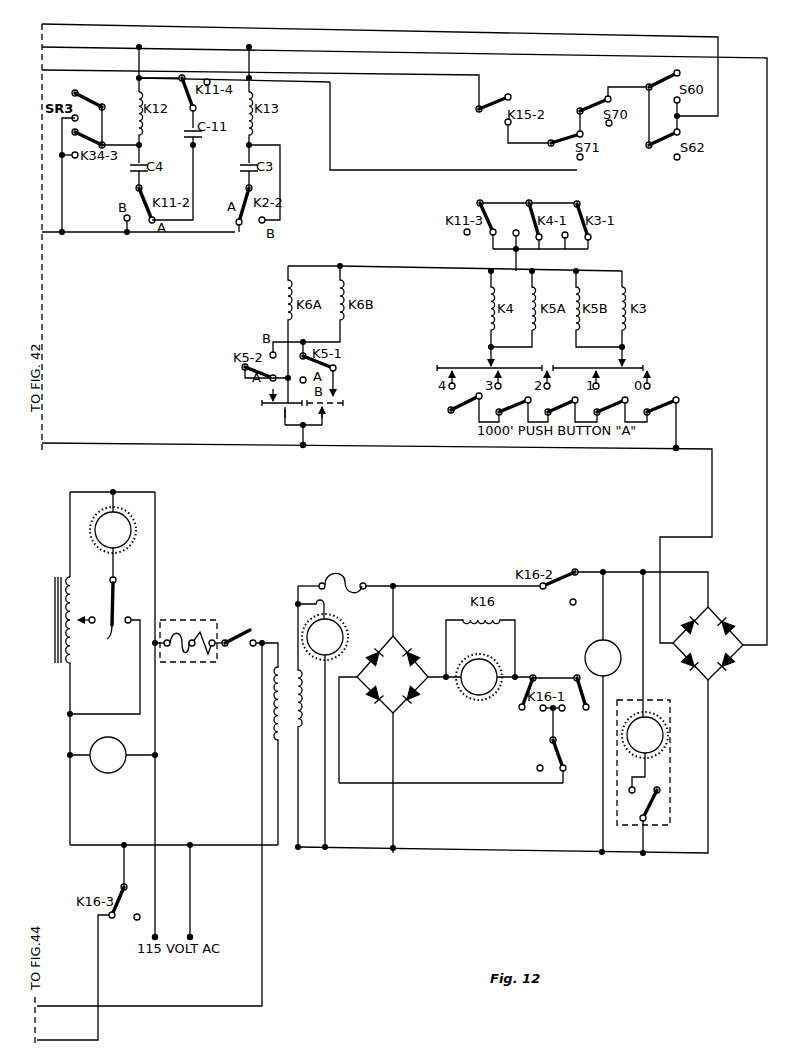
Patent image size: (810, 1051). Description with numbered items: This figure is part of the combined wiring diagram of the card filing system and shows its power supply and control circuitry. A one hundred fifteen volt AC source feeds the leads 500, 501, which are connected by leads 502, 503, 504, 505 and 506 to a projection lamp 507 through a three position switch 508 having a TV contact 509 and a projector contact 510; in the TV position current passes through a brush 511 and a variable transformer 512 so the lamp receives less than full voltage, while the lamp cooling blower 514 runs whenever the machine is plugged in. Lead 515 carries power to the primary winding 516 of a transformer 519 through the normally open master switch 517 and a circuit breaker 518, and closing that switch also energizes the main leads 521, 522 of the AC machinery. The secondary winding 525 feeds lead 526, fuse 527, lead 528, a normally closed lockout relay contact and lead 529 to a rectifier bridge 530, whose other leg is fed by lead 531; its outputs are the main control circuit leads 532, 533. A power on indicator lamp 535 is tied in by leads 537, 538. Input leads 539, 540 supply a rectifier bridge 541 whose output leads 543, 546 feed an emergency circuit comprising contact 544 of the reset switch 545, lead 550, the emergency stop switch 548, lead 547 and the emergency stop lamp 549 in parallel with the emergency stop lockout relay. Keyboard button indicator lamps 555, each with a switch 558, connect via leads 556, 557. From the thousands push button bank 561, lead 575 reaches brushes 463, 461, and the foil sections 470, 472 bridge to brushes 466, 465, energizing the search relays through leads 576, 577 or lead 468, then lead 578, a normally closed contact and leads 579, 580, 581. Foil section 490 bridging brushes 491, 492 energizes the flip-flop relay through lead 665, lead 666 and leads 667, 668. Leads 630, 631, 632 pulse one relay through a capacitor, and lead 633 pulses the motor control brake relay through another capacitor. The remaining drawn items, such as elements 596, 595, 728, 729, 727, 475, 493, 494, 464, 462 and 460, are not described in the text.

The bus line 596 is at (52, 26).
The main control circuit lead 533 is at (52, 50).
The bus line 595 is at (52, 73).
The lead 581 is at (256, 63).
The lead 580 is at (444, 171).
The lead 632 is at (145, 60).
The contact 728 is at (118, 99).
The contact 729 is at (122, 126).
The line 727 is at (62, 191).
The lead 630 is at (50, 240).
The lead 631 is at (115, 240).
The lead 633 is at (210, 240).
The lead 579 is at (515, 190).
The lead 578 is at (522, 260).
The lead 667 is at (320, 263).
The lead 668 is at (413, 268).
The lead 468 is at (610, 277).
The lead 666 is at (284, 335).
The lead 576 is at (506, 338).
The lead 577 is at (535, 347).
The brush 466 is at (495, 362).
The brush 465 is at (626, 360).
The outer foil section 470 is at (460, 367).
The contact bar 475 is at (556, 366).
The foil section 472 is at (640, 368).
The brush 491 is at (335, 386).
The relay contact 493 is at (262, 388).
The foil section 490 is at (266, 406).
The brush 492 is at (325, 428).
The line 494 is at (280, 428).
The lead 665 is at (305, 447).
The push button switch 464 is at (473, 402).
The brush 463 is at (522, 404).
The push button switch 462 is at (571, 404).
The brush 461 is at (620, 404).
The push button switch 460 is at (661, 418).
The thousands push button bank 561 is at (444, 401).
The lead 575 is at (678, 414).
The main control circuit lead 532 is at (42, 440).
The rectifier bridge 530 is at (708, 643).
The lead 529 is at (627, 572).
The lead 528 is at (455, 585).
The lead 526 is at (313, 580).
The fuse 527 is at (342, 575).
The lead 537 is at (327, 608).
The power on indicator lamp 535 is at (325, 637).
The lead 538 is at (326, 806).
The input lead 539 is at (395, 614).
The rectifier bridge 541 is at (392, 674).
The output lead 543 is at (341, 712).
The input lead 540 is at (395, 777).
The output lead 546 is at (440, 680).
The emergency stop lamp 549 is at (479, 677).
The lead 547 is at (508, 690).
The lead 550 is at (551, 712).
The emergency stop switch 548 is at (583, 713).
The contact 544 is at (566, 771).
The reset switch 545 is at (550, 777).
The lead 556 is at (646, 682).
The keyboard button indicator lamp 555 is at (643, 762).
The switch 558 is at (658, 802).
The lead 557 is at (645, 840).
The lead 531 is at (710, 740).
The lead 504 is at (62, 510).
The projection lamp 507 is at (113, 533).
The lead 503 is at (155, 547).
The three position switch 508 is at (114, 617).
The contact 509 is at (92, 617).
The contact 510 is at (130, 612).
The brush 511 is at (82, 630).
The variable transformer 512 is at (50, 640).
The lamp cooling blower 514 is at (111, 755).
The lead 502 is at (156, 742).
The circuit breaker 518 is at (182, 663).
The master switch 517 is at (243, 626).
The primary winding 516 is at (273, 697).
The secondary winding 525 is at (311, 717).
The transformer 519 is at (291, 732).
The lead 505 is at (90, 841).
The lead 506 is at (172, 843).
The lead 515 is at (234, 843).
The lead 500 is at (155, 890).
The lead 501 is at (190, 905).
The main lead 521 is at (50, 1002).
The main lead 522 is at (48, 1036).